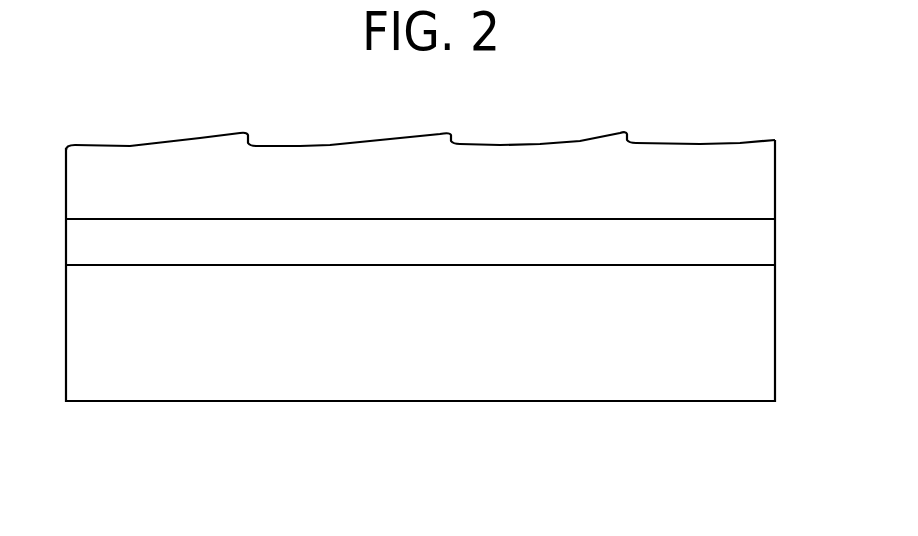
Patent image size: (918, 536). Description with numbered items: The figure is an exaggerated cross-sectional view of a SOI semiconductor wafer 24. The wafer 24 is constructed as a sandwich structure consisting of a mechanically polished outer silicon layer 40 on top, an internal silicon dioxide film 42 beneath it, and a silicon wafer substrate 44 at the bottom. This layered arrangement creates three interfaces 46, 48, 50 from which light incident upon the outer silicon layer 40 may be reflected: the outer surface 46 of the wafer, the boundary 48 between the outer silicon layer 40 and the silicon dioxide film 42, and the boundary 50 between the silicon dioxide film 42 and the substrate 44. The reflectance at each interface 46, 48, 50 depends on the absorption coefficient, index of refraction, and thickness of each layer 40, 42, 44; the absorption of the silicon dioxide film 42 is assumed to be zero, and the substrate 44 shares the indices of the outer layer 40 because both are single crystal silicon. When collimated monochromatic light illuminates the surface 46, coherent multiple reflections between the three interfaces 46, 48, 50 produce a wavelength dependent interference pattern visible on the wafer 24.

The SOI semiconductor wafer 24 is at (192, 403).
The outer silicon layer 40 is at (768, 163).
The silicon dioxide film 42 is at (767, 240).
The silicon wafer substrate 44 is at (763, 313).
The interface 46 is at (99, 143).
The interface 48 is at (87, 218).
The interface 50 is at (87, 264).